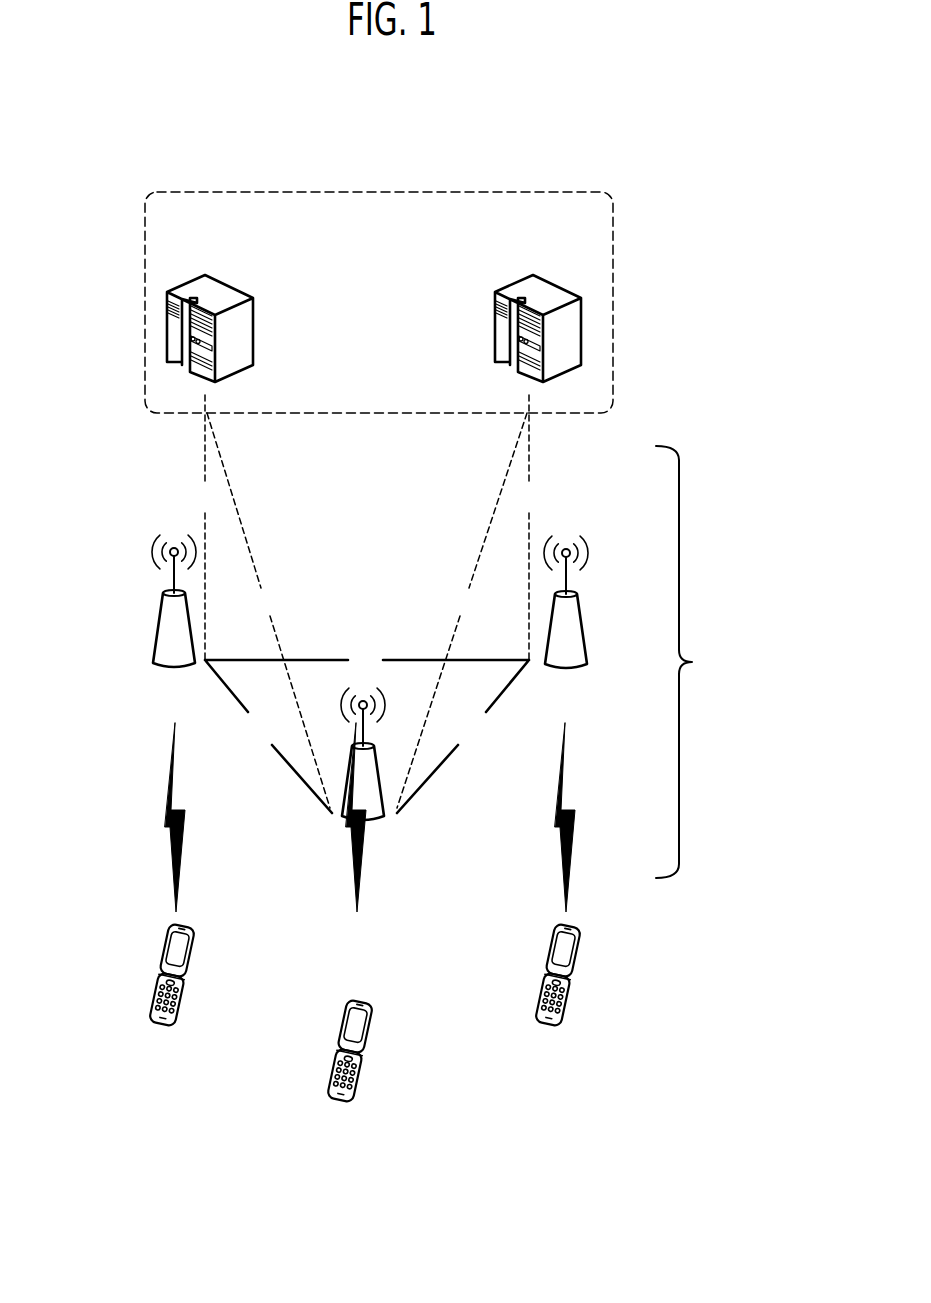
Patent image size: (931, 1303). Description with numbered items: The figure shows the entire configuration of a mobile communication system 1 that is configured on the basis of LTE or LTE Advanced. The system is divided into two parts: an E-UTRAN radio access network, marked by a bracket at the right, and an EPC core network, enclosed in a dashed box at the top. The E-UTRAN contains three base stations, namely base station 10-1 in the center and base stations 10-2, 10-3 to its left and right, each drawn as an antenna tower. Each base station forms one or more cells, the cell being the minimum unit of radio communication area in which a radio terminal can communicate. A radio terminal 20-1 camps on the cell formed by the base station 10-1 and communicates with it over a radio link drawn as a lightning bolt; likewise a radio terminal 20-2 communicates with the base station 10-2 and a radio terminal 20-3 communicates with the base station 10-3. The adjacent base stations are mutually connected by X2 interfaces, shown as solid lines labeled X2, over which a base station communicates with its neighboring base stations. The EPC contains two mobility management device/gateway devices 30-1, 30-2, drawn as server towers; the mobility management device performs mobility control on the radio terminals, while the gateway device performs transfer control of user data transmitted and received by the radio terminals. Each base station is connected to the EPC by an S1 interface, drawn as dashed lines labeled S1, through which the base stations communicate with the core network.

The mobile communication system 1 is at (440, 616).
The base station 10-1 is at (370, 818).
The base station 10-2 is at (160, 627).
The base station 10-3 is at (623, 603).
The radio terminal 20-1 is at (338, 1100).
The radio terminal 20-2 is at (160, 1023).
The radio terminal 20-3 is at (547, 1023).
The mobility management device/gateway device 30-1 is at (228, 285).
The mobility management device/gateway device 30-2 is at (512, 280).